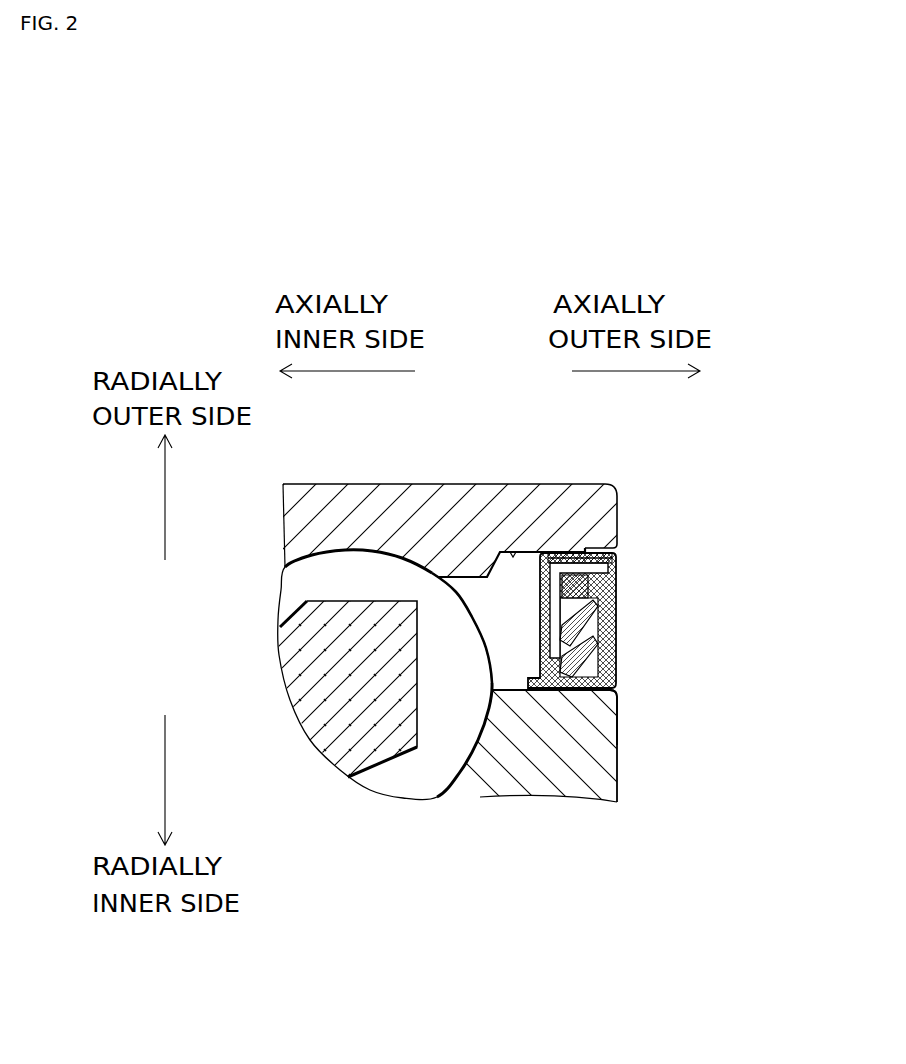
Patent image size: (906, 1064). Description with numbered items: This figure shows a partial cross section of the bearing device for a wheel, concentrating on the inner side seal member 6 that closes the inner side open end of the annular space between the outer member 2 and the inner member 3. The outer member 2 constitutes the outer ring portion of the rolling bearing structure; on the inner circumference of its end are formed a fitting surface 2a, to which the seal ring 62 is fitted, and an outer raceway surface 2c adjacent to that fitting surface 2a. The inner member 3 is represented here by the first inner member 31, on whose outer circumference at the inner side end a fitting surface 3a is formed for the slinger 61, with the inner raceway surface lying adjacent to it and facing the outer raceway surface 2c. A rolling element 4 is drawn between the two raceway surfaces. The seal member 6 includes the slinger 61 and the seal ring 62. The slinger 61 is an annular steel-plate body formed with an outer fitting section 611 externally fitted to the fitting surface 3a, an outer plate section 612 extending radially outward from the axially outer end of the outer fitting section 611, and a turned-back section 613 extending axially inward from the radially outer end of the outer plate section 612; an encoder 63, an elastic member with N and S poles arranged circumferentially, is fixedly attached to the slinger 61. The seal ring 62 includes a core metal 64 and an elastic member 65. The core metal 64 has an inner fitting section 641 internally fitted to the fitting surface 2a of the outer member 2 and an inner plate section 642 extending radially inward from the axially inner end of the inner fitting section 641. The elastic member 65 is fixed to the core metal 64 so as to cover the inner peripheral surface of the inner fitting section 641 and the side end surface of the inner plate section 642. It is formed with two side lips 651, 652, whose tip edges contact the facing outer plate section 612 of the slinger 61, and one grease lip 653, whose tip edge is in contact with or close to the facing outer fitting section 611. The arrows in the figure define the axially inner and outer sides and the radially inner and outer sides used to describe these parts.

The outer member 2 is at (447, 615).
The fitting surface 2a is at (514, 553).
The outer raceway surface 2c is at (358, 548).
The inner member 3 is at (525, 755).
The fitting surface 3a is at (510, 692).
The first inner member 31 is at (575, 792).
The ball 4 is at (400, 798).
The seal member 6 is at (664, 619).
The slinger 61 is at (656, 717).
The outer fitting section 611 is at (567, 700).
The outer plate section 612 is at (610, 667).
The turned-back section 613 is at (575, 722).
The seal ring 62 is at (729, 523).
The encoder 63 is at (604, 650).
The core metal 64 is at (639, 536).
The inner fitting section 641 is at (612, 555).
The inner plate section 642 is at (611, 566).
The elastic member 65 is at (645, 622).
The side lip 651 is at (597, 606).
The side lip 652 is at (623, 651).
The grease lip 653 is at (589, 581).